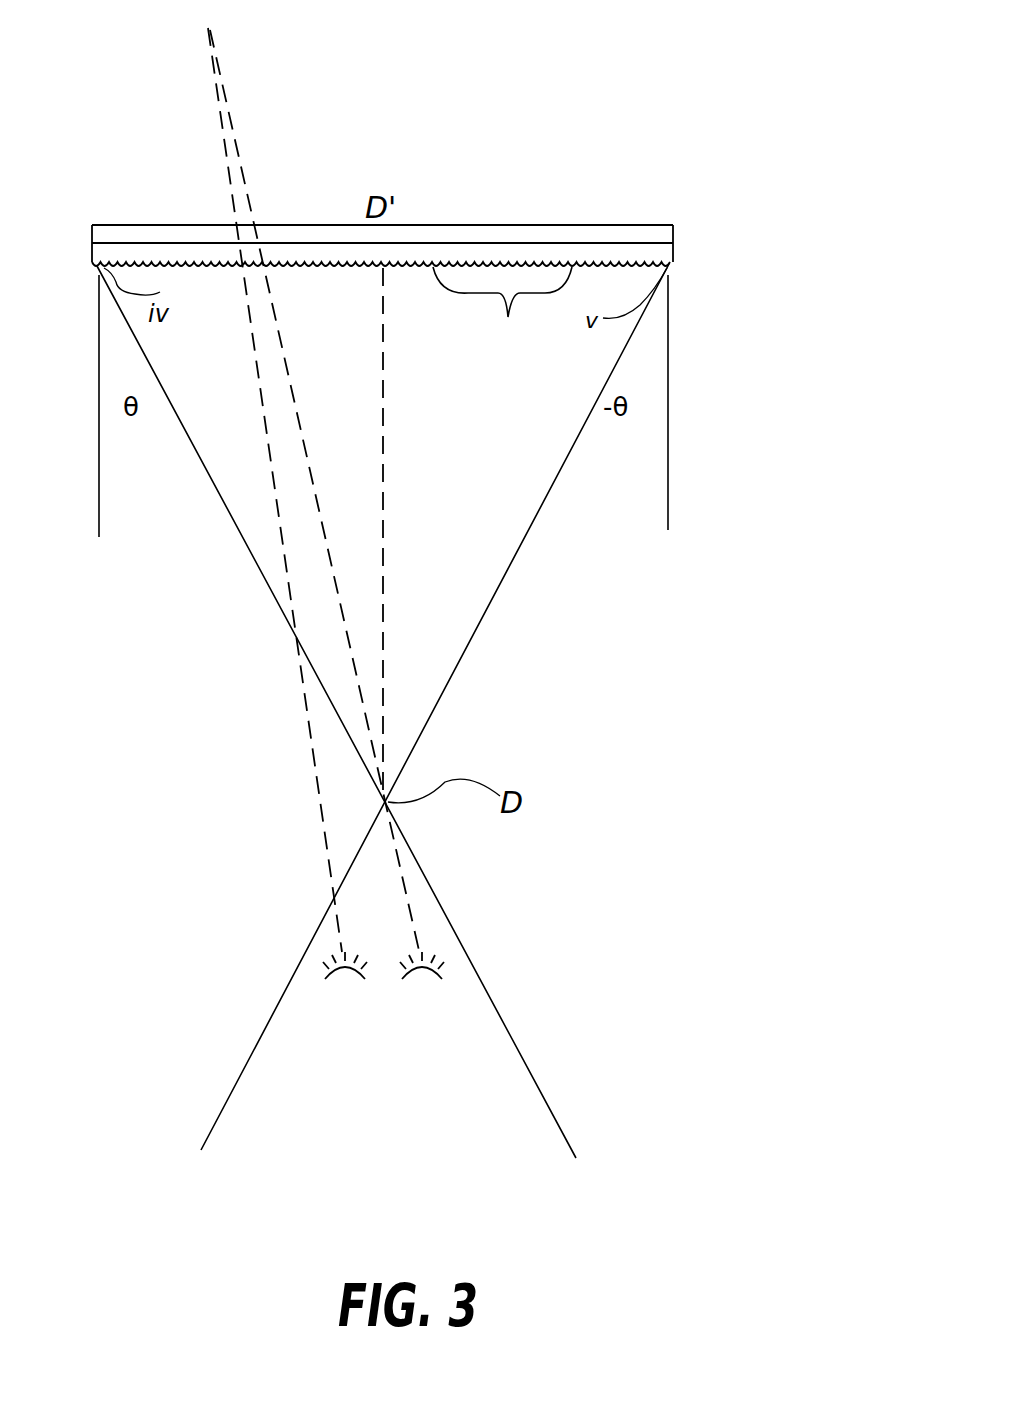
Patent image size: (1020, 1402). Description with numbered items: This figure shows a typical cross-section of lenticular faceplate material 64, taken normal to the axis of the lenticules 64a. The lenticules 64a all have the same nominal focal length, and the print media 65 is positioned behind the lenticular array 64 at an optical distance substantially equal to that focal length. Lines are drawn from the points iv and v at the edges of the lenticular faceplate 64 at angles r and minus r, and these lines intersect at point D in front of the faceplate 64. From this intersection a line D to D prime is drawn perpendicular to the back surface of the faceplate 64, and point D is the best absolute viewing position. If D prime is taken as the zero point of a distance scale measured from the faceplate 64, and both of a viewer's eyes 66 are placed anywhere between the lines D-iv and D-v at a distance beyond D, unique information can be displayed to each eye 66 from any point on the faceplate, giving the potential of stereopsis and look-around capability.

The lenticular faceplate material 64 is at (674, 246).
The print media 65 is at (674, 231).
The lenticules 64a is at (502, 313).
The viewer's eyes 66 is at (357, 981).